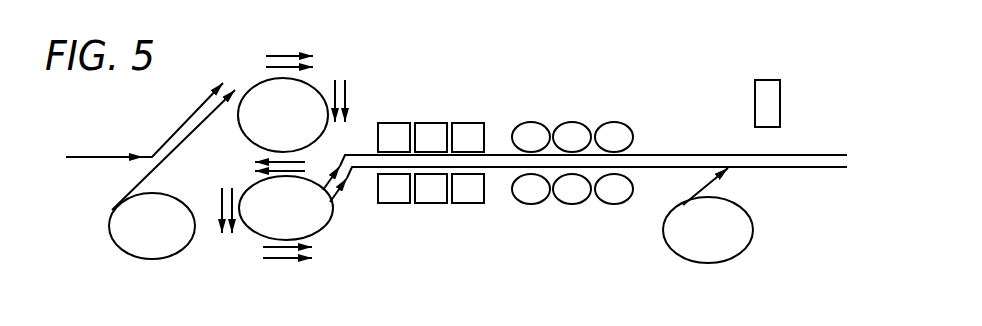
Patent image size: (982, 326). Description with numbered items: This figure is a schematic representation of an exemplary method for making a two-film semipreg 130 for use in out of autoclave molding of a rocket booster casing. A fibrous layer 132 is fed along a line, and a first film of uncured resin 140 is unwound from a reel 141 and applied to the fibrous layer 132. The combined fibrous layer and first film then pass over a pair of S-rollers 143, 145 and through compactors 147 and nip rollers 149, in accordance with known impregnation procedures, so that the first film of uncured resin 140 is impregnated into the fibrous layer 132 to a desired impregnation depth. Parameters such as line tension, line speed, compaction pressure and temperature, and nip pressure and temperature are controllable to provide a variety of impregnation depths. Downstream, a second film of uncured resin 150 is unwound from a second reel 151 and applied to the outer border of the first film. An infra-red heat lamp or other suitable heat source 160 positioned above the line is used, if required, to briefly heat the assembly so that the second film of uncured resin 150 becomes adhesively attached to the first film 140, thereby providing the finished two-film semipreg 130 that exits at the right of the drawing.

The 2-film semipreg 130 is at (793, 160).
The fibrous layer 132 is at (102, 157).
The first film of uncured resin 140 is at (137, 183).
The reel 141 is at (152, 226).
The S-roller 143 is at (283, 115).
The S-roller 145 is at (286, 208).
The compactors 147 is at (427, 112).
The nip rollers 149 is at (553, 112).
The second film of uncured resin 150 is at (702, 188).
The reel 151 is at (708, 230).
The heat source 160 is at (773, 80).